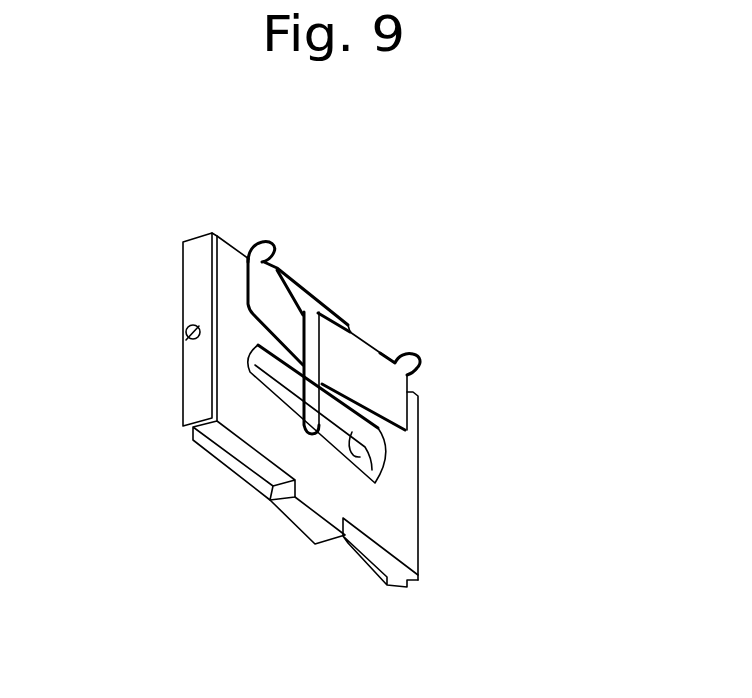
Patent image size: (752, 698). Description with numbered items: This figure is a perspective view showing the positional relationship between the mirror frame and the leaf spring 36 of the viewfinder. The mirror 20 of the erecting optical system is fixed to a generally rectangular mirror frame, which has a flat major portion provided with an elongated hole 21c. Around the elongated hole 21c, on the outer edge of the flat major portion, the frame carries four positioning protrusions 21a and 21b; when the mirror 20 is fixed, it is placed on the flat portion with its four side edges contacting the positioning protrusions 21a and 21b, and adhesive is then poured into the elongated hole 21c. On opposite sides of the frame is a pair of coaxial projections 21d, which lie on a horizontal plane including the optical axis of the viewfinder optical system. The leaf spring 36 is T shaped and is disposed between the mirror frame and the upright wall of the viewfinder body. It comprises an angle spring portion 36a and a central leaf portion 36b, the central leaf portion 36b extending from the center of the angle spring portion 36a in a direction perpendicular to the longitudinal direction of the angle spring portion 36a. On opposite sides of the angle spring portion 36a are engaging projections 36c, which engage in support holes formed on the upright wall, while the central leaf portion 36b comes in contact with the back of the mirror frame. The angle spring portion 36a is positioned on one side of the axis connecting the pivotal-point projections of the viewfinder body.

The mirror 20 is at (240, 458).
The positioning protrusion 21a is at (200, 425).
The positioning protrusion 21b is at (310, 523).
The elongated hole 21c is at (363, 468).
The projection 21d is at (187, 337).
The leaf spring 36 is at (330, 143).
The angle spring portion 36a is at (285, 302).
The central leaf portion 36b is at (352, 432).
The engaging projection 36c is at (270, 247).